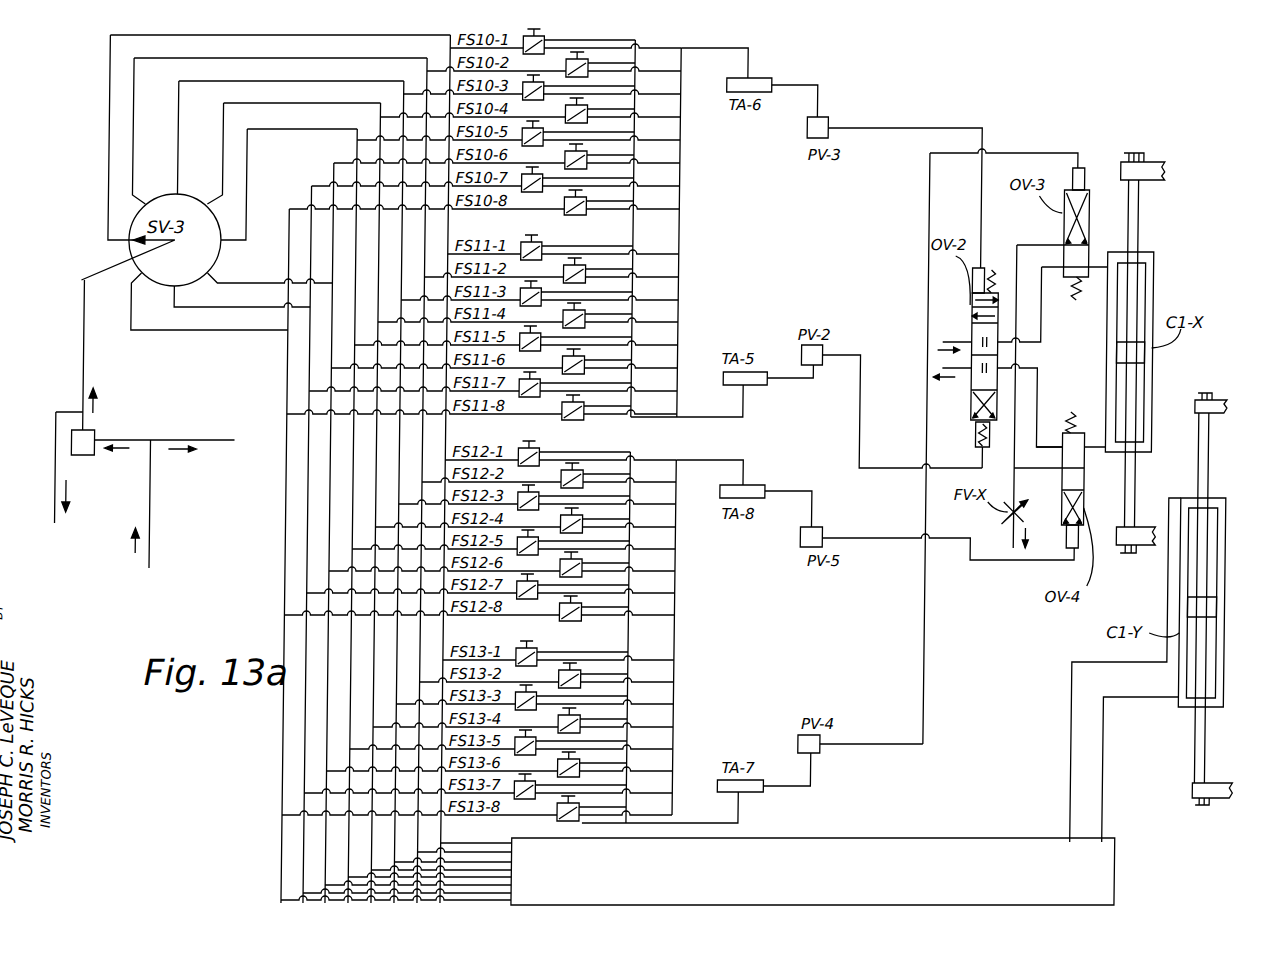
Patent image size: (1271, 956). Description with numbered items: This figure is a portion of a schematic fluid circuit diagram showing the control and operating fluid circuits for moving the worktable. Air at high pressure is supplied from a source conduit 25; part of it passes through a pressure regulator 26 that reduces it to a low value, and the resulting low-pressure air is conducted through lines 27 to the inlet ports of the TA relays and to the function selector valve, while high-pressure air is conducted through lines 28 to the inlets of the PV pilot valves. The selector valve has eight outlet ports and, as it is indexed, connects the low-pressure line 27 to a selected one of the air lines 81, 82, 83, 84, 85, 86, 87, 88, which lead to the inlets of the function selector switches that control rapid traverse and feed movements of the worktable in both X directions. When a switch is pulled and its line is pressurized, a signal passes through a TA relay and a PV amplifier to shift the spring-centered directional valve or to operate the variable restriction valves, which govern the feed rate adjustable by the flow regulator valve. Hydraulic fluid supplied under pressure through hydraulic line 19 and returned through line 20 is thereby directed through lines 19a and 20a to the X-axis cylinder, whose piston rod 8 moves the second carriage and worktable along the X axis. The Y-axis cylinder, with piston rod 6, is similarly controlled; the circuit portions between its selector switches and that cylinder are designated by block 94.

The piston rod 6 is at (1201, 463).
The piston rod 8 is at (1137, 223).
The hydraulic line 19 is at (967, 341).
The line 19a is at (1100, 288).
The line 20 is at (968, 381).
The line 20a is at (1097, 441).
The conduit 25 is at (154, 546).
The pressure regulator 26 is at (98, 432).
The lines 27 is at (59, 480).
The lines 28 is at (190, 440).
The air line 81 is at (452, 219).
The air line 82 is at (430, 242).
The air line 83 is at (404, 250).
The air line 84 is at (381, 252).
The air line 85 is at (357, 252).
The air line 86 is at (334, 266).
The air line 87 is at (312, 349).
The air line 88 is at (290, 381).
The block 94 is at (905, 838).